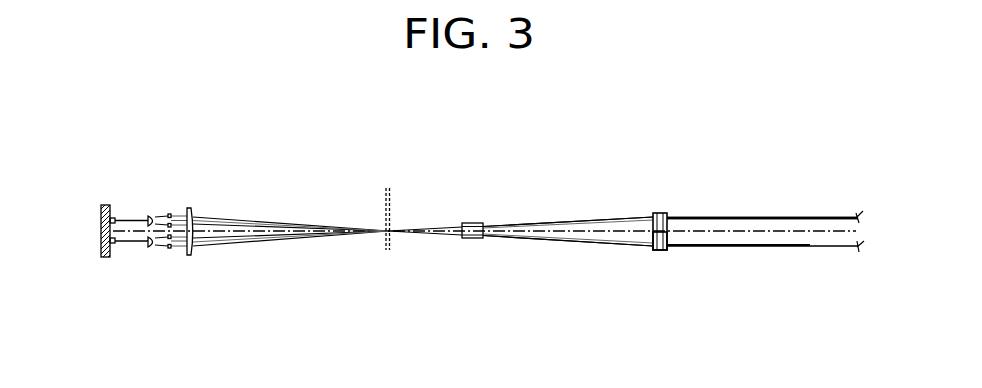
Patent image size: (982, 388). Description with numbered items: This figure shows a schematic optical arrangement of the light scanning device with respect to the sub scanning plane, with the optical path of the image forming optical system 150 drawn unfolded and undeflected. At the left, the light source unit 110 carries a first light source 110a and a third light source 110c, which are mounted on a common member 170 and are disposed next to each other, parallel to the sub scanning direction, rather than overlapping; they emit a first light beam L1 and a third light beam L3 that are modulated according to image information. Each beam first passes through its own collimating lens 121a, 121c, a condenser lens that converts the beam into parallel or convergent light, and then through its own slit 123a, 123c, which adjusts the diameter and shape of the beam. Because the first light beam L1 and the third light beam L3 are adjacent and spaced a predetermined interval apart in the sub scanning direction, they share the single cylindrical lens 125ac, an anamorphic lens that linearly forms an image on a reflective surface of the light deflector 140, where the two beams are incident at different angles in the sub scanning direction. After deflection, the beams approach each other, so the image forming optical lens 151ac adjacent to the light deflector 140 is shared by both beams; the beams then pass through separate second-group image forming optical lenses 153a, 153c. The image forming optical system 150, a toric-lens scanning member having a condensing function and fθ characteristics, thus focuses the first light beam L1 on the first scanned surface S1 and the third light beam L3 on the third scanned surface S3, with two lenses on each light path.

The light source unit 110 is at (104, 268).
The first light source 110a is at (117, 218).
The third light source 110c is at (115, 244).
The substrate / heat sink 170 is at (103, 207).
The collimating lens 121a is at (155, 215).
The collimating lens 121c is at (153, 248).
The slit 123a is at (170, 214).
The slit 123c is at (170, 249).
The cylindrical lens 125ac is at (192, 212).
The light deflector 140 is at (388, 212).
The image forming optical system 150 is at (562, 261).
The image forming optical lens 151ac is at (473, 239).
The image forming optical lens 153a is at (660, 267).
The image forming optical lens 153c is at (660, 213).
The first light beam L1 is at (588, 232).
The third light beam L3 is at (588, 232).
The first scanned surface S1 is at (857, 250).
The third scanned surface S3 is at (857, 216).